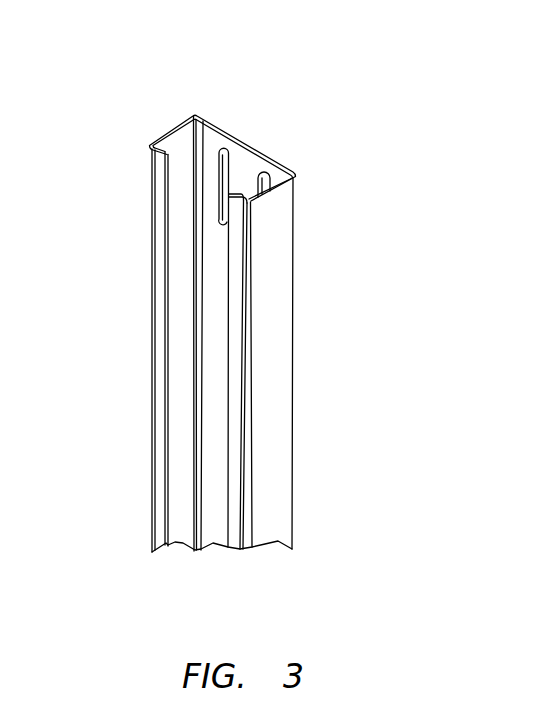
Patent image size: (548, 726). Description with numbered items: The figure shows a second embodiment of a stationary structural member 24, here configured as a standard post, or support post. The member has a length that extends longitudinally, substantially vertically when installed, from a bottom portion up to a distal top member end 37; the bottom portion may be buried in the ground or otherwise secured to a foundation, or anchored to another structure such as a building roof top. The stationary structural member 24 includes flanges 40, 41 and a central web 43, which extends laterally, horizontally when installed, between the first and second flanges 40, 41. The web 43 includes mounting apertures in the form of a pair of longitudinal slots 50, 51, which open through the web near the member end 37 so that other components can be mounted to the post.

The stationary structural member 24 is at (281, 292).
The member end 37 is at (218, 128).
The flange 40 is at (150, 270).
The flange 41 is at (283, 357).
The central web 43 is at (215, 518).
The longitudinal slot 50 is at (227, 163).
The longitudinal slot 51 is at (272, 193).